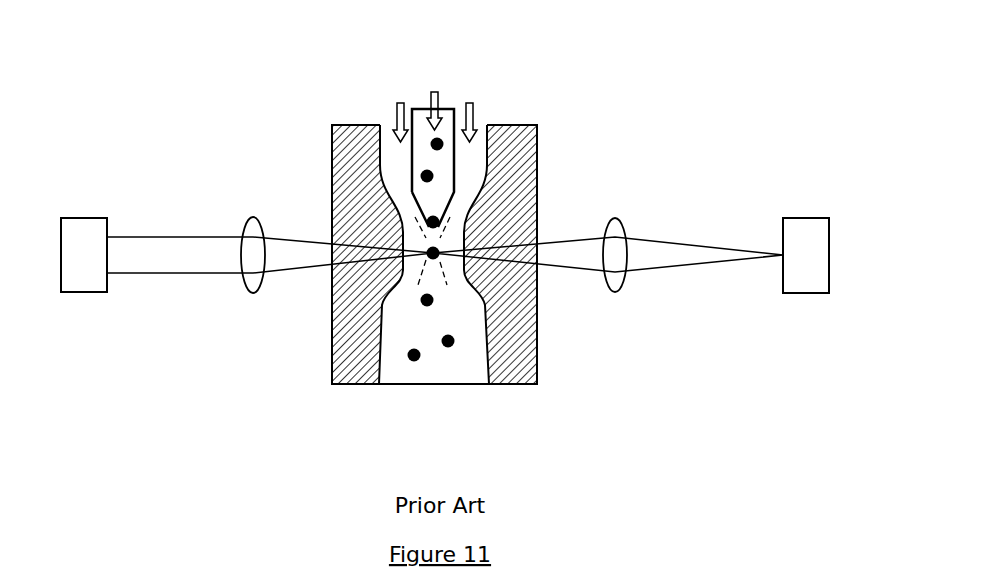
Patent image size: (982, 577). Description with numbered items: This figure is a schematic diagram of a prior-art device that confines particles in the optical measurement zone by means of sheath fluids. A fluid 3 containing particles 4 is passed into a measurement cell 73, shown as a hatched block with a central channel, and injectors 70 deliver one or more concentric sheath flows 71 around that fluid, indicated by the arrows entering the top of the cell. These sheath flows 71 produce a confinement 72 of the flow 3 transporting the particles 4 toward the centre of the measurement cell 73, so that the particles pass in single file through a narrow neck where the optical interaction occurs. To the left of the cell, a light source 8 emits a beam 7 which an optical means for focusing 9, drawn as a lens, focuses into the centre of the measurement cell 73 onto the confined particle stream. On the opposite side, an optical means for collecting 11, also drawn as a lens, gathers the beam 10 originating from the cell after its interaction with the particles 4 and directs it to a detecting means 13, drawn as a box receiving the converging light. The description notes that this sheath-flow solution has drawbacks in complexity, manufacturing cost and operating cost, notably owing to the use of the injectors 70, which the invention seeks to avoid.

The fluid 3 is at (434, 92).
The particles 4 is at (414, 361).
The beam 7 is at (315, 239).
The light source 8 is at (95, 218).
The optical means for focusing 9 is at (253, 217).
The beam originating from the aperture flow-cell 10 is at (552, 268).
The optical means for collecting 11 is at (615, 218).
The detecting means 13 is at (810, 218).
The injectors 70 is at (455, 182).
The concentric sheath flows 71 is at (400, 103).
The confinement 72 is at (443, 234).
The measurement cell 73 is at (523, 347).